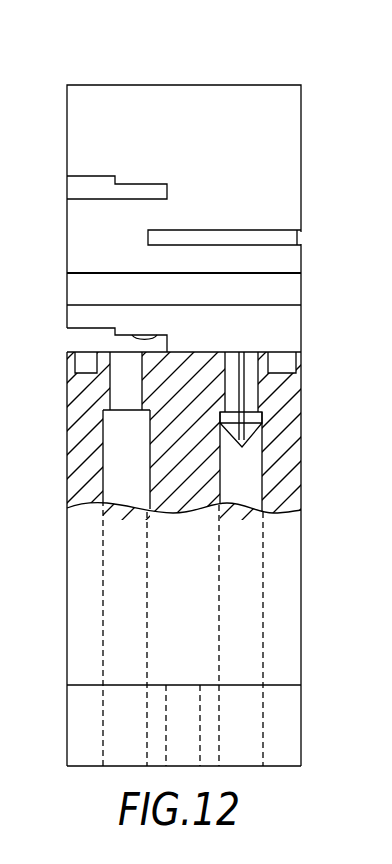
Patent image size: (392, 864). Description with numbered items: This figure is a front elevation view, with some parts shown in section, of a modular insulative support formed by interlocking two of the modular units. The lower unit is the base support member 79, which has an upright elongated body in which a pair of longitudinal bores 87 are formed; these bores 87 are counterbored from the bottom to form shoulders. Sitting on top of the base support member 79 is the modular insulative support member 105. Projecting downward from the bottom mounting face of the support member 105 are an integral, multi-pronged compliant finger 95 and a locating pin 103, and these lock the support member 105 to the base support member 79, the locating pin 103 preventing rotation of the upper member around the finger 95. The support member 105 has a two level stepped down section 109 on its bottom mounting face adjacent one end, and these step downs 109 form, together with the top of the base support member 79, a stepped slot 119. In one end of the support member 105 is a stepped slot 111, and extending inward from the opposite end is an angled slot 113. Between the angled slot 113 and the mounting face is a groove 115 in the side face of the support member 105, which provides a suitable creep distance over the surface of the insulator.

The base support member 79 is at (285, 560).
The longitudinal bores 87 is at (248, 468).
The compliant finger 95 is at (233, 357).
The locating pin 103 is at (212, 338).
The modular insulative support member 105 is at (223, 92).
The stepped down section 109 is at (155, 340).
The stepped slot 111 is at (78, 192).
The angled slot 113 is at (297, 240).
The groove 115 is at (288, 295).
The stepped slot 119 is at (78, 342).